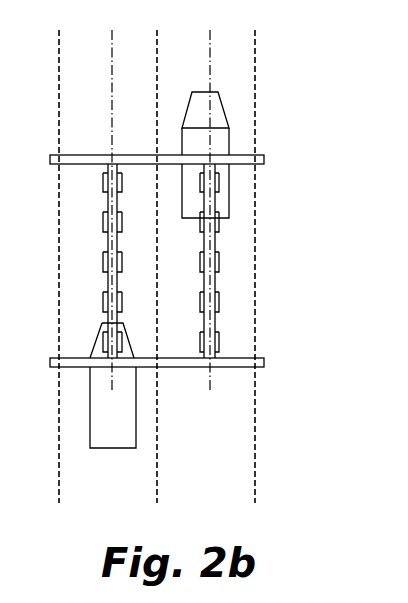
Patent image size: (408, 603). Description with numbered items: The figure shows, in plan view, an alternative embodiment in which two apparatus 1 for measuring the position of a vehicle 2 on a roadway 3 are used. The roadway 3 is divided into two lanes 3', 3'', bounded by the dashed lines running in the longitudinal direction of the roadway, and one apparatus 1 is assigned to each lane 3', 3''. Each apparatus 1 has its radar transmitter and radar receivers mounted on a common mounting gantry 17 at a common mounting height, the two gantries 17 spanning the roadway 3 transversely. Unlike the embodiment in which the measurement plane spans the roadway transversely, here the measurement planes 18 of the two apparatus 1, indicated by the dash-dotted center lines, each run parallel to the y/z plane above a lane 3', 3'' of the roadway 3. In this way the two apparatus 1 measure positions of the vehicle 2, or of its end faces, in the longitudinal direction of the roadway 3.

The apparatus 1 is at (76, 251).
The vehicle 2 is at (100, 421).
The roadway 3 is at (182, 266).
The lane 3' is at (109, 487).
The lane 3'' is at (206, 487).
The mounting gantry 17 is at (288, 373).
The measurement plane 18 is at (210, 85).